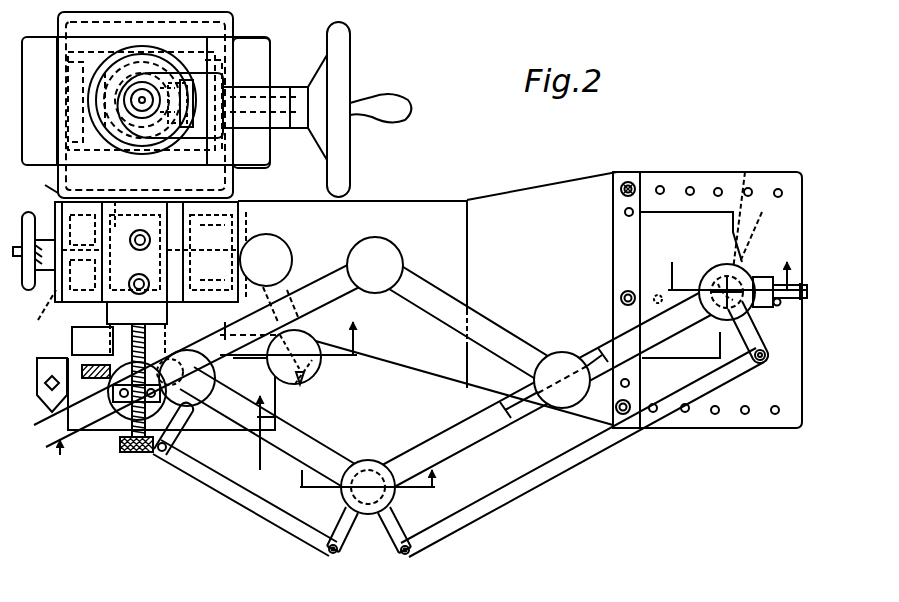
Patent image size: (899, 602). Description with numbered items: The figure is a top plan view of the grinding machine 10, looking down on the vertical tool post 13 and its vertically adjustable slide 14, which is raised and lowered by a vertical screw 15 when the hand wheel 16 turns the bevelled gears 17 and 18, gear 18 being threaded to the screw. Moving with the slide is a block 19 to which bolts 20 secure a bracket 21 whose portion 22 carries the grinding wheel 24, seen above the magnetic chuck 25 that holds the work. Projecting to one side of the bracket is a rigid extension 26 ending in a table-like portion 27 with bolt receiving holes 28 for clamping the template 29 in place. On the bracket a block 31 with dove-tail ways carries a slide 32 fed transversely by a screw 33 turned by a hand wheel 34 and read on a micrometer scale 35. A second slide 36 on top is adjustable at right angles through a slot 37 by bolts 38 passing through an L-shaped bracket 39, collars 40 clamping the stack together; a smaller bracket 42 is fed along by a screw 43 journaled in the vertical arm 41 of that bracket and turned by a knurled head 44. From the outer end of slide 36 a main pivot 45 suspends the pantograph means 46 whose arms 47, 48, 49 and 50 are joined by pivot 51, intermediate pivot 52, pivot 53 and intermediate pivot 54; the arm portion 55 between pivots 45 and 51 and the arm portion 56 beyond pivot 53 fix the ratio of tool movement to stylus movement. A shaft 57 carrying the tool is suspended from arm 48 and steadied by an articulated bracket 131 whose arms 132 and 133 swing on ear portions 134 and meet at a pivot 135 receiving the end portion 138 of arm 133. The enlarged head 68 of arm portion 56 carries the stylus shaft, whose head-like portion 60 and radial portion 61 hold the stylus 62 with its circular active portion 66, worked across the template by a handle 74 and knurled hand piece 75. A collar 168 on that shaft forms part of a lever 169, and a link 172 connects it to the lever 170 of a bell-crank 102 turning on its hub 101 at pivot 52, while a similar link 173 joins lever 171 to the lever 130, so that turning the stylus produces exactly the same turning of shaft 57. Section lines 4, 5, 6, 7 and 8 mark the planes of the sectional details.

The section line 4- 4 is at (737, 266).
The section line 5- 5 is at (507, 394).
The section line 6- 6 is at (366, 489).
The section line 7- 7 is at (162, 437).
The section line 8- 8 is at (287, 330).
The grinding machine 10 is at (508, 172).
The vertical tool post 13 is at (279, 42).
The vertically adjustable slide 14 is at (88, 66).
The vertical screw 15 is at (135, 100).
The hand wheel 16 is at (347, 56).
The bevelled gear 17 is at (199, 72).
The bevelled gear 18 is at (110, 115).
The bed or block 19 is at (100, 132).
The bolts 20 is at (238, 255).
The bracket 21 is at (238, 270).
The portion of bracket 22 is at (75, 334).
The grinding wheel 24 is at (48, 412).
The magnetic chuck 25 is at (231, 425).
The bracket or extension 26 is at (457, 190).
The table-like portion 27 is at (767, 184).
The bolt receiving holes 28 is at (718, 187).
The template 29 is at (668, 212).
The block or portion with dove-tail ways 31 is at (247, 212).
The slide 32 is at (238, 230).
The screw 33 is at (34, 314).
The hand wheel 34 is at (29, 212).
The micrometer scale 35 is at (42, 181).
The second slide 36 is at (168, 197).
The vertical slot 37 is at (140, 230).
The bolts 38 is at (145, 232).
The L-shaped bracket 39 is at (118, 215).
The collars 40 is at (168, 320).
The vertical arm 41 is at (72, 345).
The smaller bracket 42 is at (58, 432).
The screw 43 is at (125, 455).
The knurled head 44 is at (124, 455).
The main pivot 45 is at (112, 422).
The pantograph means 46 is at (482, 291).
The pantograph arm 47 is at (207, 350).
The pantograph arm 48 is at (277, 432).
The pantograph arm 49 is at (547, 389).
The pantograph arm 50 is at (468, 322).
The pivot 51 is at (191, 398).
The intermediate pivot 52 is at (364, 472).
The pivot 53 is at (559, 372).
The intermediate pivot 54 is at (388, 250).
The arm portion 55 is at (178, 440).
The arm portion 56 is at (646, 302).
The shaft 57 is at (225, 371).
The head-like portion 60 is at (757, 313).
The radial portion 61 is at (760, 278).
The stylus 62 is at (726, 282).
The circular portion of stylus 66 is at (746, 256).
The head-like portion 68 is at (713, 320).
The handle 74 is at (790, 300).
The knurled hand piece 75 is at (716, 282).
The hub or pivot portion 101 is at (388, 462).
The bell-crank 102 is at (378, 538).
The lever 130 is at (155, 468).
The articulated bracket 131 is at (318, 384).
The bracket arm 132 is at (285, 283).
The bracket arm 133 is at (306, 403).
The ear portions 134 is at (246, 233).
The pivot 135 is at (330, 371).
The end portion of bracket arm 138 is at (308, 347).
The collar or eye-like portion 168 is at (745, 207).
The lever 169 is at (753, 367).
The lever 170 is at (406, 560).
The lever 171 is at (333, 562).
The link 172 is at (566, 467).
The link 173 is at (267, 513).